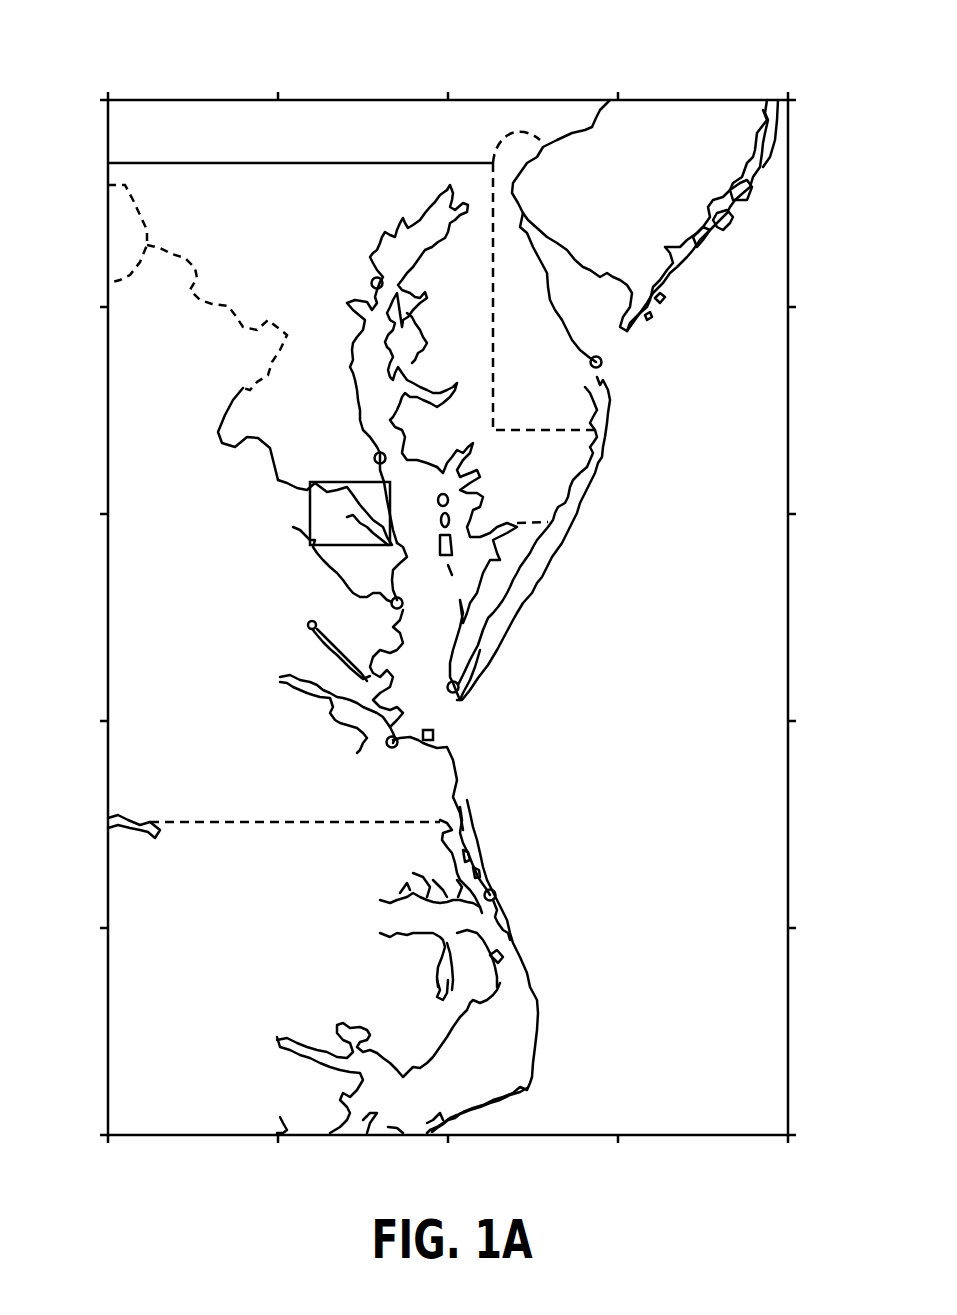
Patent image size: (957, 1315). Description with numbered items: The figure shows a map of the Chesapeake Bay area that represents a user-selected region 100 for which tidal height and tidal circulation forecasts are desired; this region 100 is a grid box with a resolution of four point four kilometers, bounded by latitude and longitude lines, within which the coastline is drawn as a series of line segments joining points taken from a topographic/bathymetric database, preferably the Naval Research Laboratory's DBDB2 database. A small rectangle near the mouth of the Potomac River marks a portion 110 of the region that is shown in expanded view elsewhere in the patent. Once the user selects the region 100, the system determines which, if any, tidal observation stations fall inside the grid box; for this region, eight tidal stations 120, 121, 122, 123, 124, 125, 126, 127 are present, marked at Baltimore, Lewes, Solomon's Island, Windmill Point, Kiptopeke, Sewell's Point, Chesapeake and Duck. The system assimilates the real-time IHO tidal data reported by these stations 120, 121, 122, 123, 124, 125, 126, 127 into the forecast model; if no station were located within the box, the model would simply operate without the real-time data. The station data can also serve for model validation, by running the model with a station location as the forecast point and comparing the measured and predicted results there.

The user-selected region 100 is at (527, 100).
The portion 110 is at (312, 505).
The tidal station 120 is at (372, 277).
The tidal station 121 is at (603, 366).
The tidal station 122 is at (374, 454).
The tidal station 123 is at (384, 608).
The tidal station 124 is at (449, 684).
The tidal station 125 is at (370, 750).
The tidal station 126 is at (428, 745).
The tidal station 127 is at (497, 900).